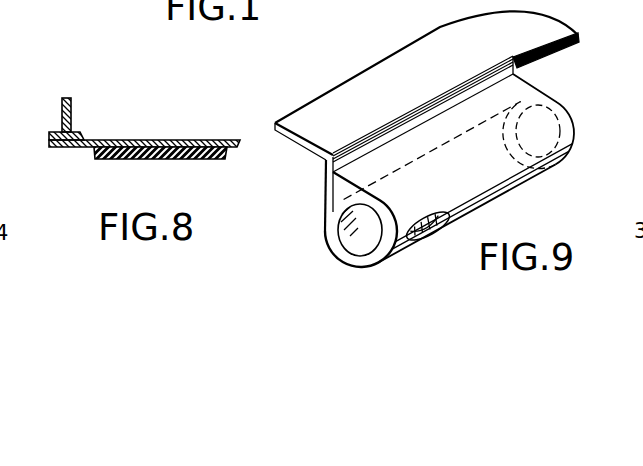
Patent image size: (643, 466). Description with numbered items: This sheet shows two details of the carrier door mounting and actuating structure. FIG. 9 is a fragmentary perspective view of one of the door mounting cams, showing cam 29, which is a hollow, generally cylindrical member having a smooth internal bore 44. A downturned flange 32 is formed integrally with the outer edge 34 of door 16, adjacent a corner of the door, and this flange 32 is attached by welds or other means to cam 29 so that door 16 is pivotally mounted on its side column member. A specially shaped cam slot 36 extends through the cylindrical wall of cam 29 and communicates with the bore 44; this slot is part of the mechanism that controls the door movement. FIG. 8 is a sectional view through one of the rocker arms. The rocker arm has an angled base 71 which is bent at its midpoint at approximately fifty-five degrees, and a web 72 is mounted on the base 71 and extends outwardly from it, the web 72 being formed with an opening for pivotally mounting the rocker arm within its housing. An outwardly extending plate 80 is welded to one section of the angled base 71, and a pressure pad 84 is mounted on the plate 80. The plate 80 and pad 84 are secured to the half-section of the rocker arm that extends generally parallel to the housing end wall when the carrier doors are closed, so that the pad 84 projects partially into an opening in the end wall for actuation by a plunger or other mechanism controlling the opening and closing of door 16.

In FIG. 9, the door 16 is at (340, 107).
In FIG. 9, the cam 29 is at (522, 193).
In FIG. 9, the downturned flange 32 is at (326, 190).
In FIG. 9, the outer edge 34 is at (563, 48).
In FIG. 9, the cam slot 36 is at (423, 218).
In FIG. 9, the internal bore 44 is at (358, 232).
In FIG. 8, the angled base 71 is at (58, 135).
In FIG. 8, the web 72 is at (72, 103).
In FIG. 8, the plate 80 is at (147, 140).
In FIG. 8, the pressure pad 84 is at (136, 156).